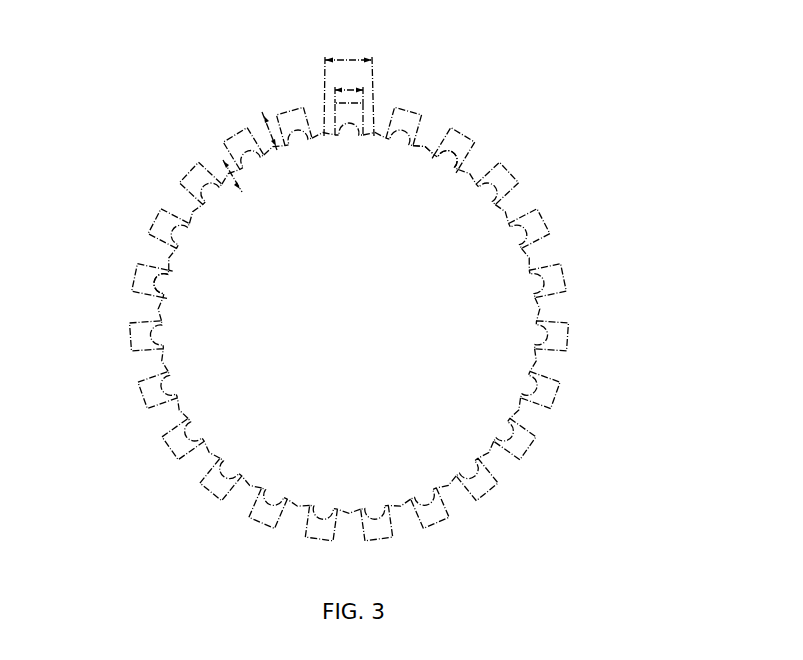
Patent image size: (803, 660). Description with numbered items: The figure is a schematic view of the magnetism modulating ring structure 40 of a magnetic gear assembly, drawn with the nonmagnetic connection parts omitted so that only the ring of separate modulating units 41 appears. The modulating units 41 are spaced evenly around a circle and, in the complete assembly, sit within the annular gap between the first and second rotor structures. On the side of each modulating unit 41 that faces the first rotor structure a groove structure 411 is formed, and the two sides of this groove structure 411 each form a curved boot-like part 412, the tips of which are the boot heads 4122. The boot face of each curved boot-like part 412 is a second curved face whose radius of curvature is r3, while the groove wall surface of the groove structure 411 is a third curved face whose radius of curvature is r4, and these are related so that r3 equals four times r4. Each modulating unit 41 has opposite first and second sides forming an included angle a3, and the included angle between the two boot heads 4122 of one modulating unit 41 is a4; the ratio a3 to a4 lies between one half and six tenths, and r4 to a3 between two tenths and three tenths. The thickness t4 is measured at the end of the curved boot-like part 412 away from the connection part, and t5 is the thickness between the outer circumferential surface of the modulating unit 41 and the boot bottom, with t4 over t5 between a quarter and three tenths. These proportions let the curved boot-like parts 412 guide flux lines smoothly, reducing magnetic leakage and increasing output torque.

The magnetism modulating ring structure 40 is at (122, 160).
The modulating unit 41 is at (134, 282).
The groove structure 411 is at (163, 283).
The curved boot-like part 412 is at (170, 269).
The boot head 4122 is at (424, 149).
The radius of curvature of the second curved face r3 is at (466, 165).
The radius of curvature of the third curved face r4 is at (456, 156).
The included angle between the first side and the second side a3 is at (350, 82).
The included angle between boot heads a4 is at (349, 84).
The thickness of one end of the curved boot-like part t4 is at (223, 160).
The thickness between the outer circumferential surface and the boot bottom t5 is at (276, 142).